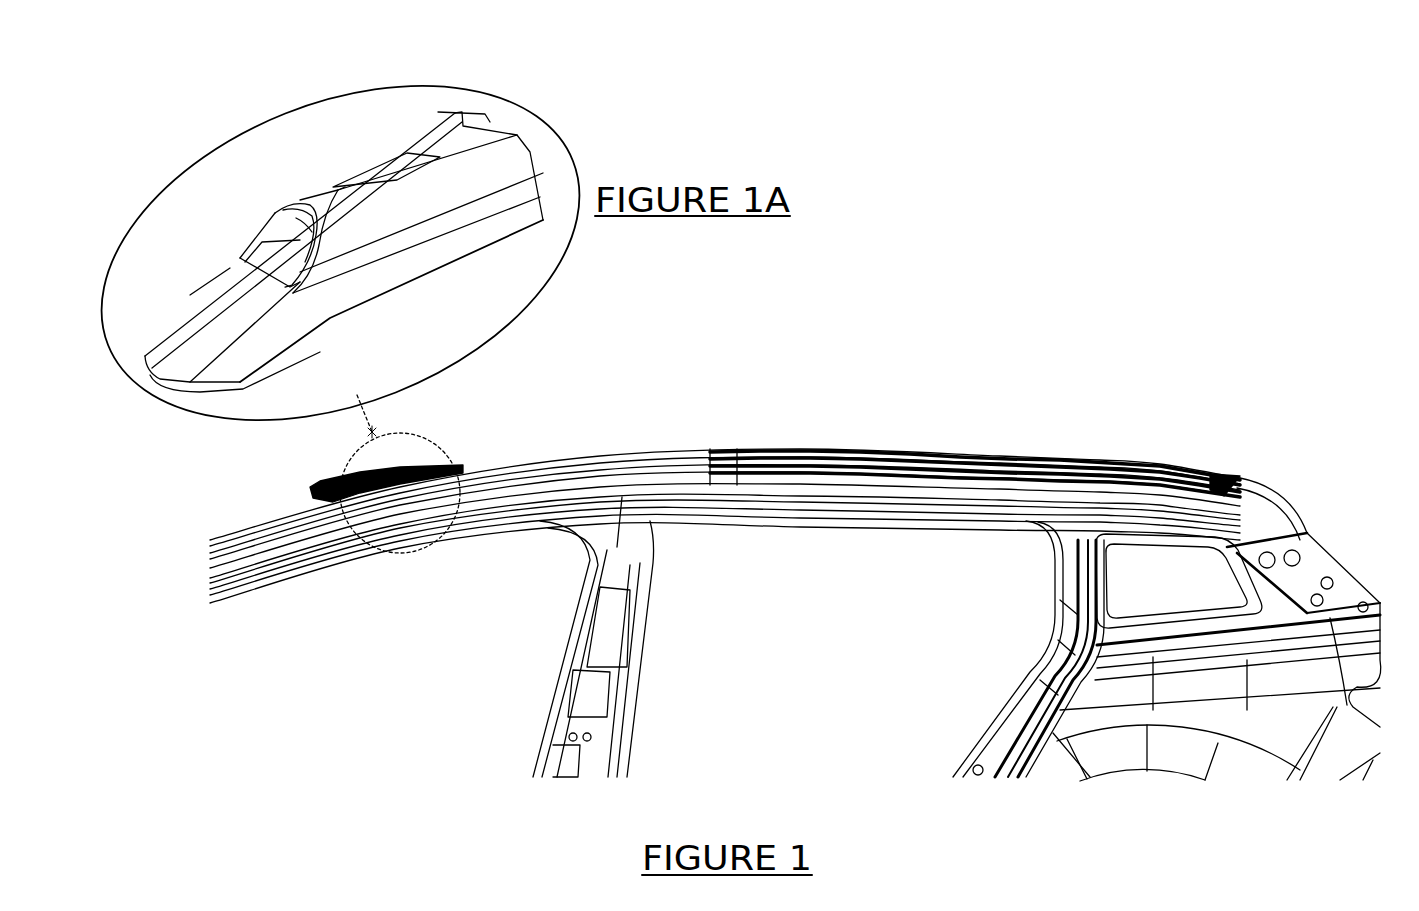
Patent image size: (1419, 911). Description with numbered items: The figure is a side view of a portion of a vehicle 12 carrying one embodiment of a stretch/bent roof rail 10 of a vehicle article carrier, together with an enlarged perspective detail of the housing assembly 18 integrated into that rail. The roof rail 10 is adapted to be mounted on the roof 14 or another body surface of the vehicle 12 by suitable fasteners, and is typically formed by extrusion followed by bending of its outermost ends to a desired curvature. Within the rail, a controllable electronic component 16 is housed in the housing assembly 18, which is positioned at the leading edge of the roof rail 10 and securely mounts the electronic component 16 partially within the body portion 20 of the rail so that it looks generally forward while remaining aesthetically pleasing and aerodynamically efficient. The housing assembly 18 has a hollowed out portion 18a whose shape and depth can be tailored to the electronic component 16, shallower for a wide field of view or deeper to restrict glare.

In FIG. 1, the roof rail apparatus 10 is at (937, 453).
In FIG. 1, the vehicle 12 is at (1265, 495).
In FIG. 1, the roof 14 is at (1250, 493).
In FIG. 1A, the component 16 is at (305, 231).
In FIG. 1A, the housing assembly 18 is at (331, 183).
In FIG. 1, the housing assembly 18 is at (410, 455).
In FIG. 1A, the hollowed out portion 18a is at (273, 238).
In FIG. 1A, the body portion 20 is at (513, 170).